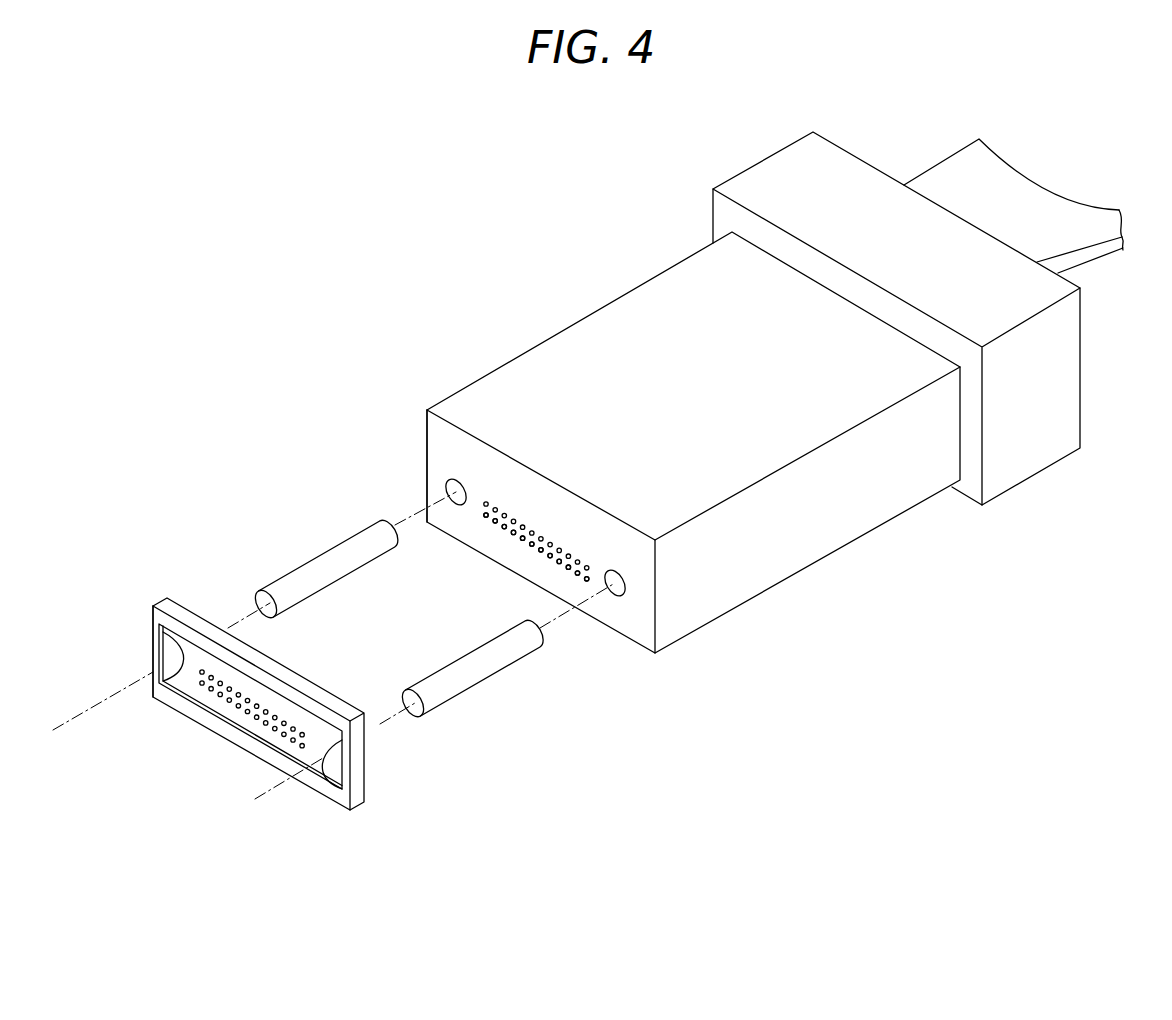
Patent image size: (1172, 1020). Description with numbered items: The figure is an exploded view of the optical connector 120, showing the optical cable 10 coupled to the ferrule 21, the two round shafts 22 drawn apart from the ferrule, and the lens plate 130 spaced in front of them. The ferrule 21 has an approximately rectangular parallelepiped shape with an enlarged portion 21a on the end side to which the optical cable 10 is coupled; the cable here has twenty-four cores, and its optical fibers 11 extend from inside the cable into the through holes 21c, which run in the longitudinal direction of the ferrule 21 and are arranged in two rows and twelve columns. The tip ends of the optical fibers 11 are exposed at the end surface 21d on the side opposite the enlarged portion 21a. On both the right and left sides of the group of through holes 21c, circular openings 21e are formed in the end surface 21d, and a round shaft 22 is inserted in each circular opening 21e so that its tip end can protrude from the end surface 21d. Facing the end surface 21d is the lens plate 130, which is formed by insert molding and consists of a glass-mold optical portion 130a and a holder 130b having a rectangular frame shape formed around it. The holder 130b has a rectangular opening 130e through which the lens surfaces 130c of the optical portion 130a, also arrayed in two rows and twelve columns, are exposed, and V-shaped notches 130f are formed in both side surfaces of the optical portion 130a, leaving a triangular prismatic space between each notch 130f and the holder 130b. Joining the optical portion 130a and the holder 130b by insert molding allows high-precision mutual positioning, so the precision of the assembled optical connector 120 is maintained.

The optical cable 10 is at (1033, 203).
The optical fiber 11 is at (550, 540).
The optical connector 120 is at (464, 250).
The ferrule 21 is at (750, 450).
The enlarged portion 21a is at (1033, 455).
The through holes 21c is at (528, 537).
The end surface 21d is at (432, 452).
The circular openings 21e is at (455, 495).
The round shaft 22 is at (342, 578).
The lens plate 130 is at (166, 591).
The optical portion 130a is at (285, 710).
The holder 130b is at (347, 700).
The lens surfaces 130c is at (247, 710).
The rectangular opening 130e is at (153, 656).
The notches 130f is at (162, 702).